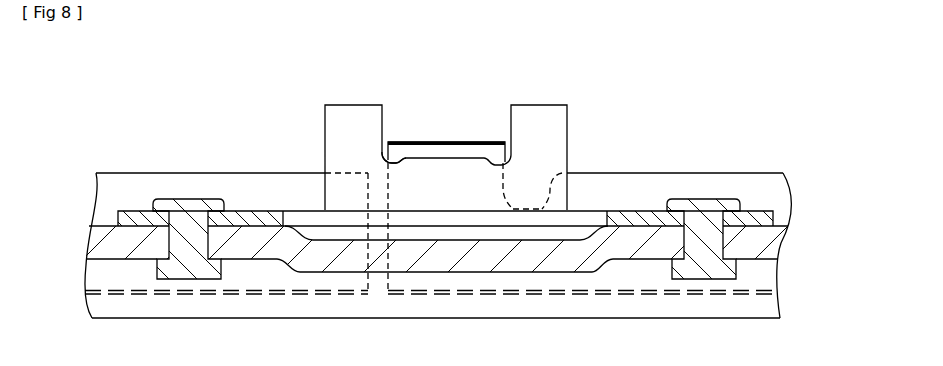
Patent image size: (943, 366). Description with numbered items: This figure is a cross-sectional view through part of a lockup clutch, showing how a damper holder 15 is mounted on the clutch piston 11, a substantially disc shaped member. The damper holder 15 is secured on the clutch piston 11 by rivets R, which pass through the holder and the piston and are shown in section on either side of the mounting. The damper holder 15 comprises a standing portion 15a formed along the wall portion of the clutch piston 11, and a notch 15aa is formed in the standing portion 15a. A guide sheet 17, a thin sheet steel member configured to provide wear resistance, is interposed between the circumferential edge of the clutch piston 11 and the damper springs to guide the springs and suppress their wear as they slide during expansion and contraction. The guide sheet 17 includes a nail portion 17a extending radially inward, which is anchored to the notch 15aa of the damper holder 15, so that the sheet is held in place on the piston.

The clutch piston 11 is at (768, 249).
The damper holder 15 is at (243, 209).
The standing portion 15a is at (338, 113).
The notch 15aa is at (386, 130).
The guide sheet 17 is at (302, 333).
The nail portion 17a is at (445, 140).
The rivet R is at (205, 262).